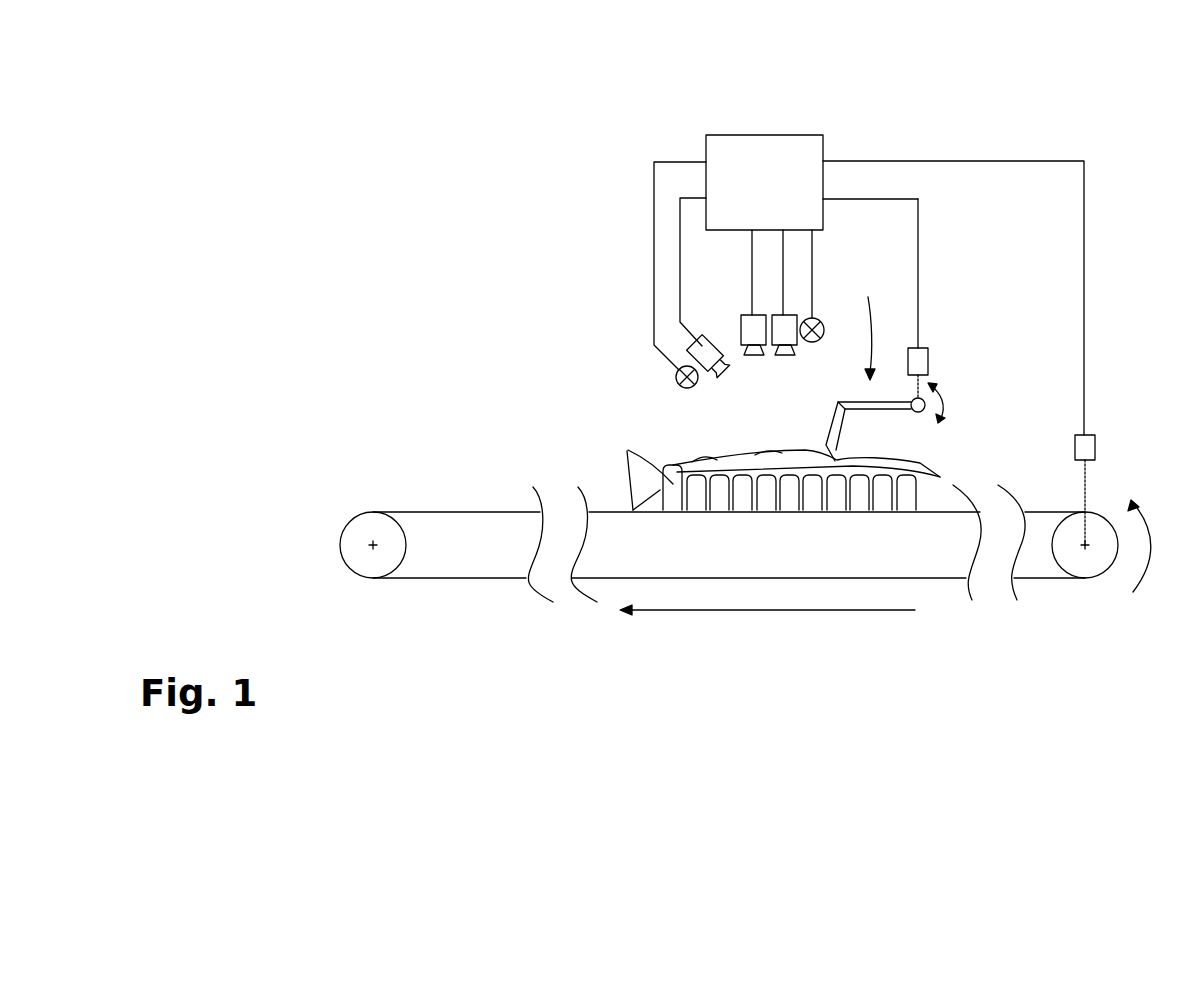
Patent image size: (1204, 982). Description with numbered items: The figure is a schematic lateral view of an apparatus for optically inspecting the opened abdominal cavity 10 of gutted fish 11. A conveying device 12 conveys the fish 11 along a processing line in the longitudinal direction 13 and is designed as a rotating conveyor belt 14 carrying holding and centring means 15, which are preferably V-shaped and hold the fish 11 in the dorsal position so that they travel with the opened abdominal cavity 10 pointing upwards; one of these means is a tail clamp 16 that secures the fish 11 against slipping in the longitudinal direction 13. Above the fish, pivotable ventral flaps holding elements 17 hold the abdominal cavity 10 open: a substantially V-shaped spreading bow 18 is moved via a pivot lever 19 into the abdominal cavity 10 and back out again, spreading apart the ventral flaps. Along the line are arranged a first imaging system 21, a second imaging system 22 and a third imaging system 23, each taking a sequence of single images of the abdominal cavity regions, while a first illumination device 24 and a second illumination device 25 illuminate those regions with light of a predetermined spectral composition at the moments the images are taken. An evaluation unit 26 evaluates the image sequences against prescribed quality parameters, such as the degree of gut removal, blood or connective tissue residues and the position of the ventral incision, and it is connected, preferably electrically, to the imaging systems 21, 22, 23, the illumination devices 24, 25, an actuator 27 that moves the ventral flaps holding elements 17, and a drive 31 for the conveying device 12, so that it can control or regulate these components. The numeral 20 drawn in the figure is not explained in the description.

The opened abdominal cavity 10 is at (847, 460).
The gutted fish 11 is at (778, 468).
The conveying device 12 is at (395, 468).
The longitudinal direction 13 is at (678, 612).
The conveyor belt 14 is at (468, 510).
The holding and centring means 15 is at (886, 492).
The tail clamp 16 is at (629, 460).
The ventral flaps holding elements 17 is at (878, 312).
The spreading bow 18 is at (831, 456).
The pivot lever 19 is at (832, 442).
The fish body part 20 is at (847, 458).
The first imaging system 21 is at (783, 323).
The second imaging system 22 is at (754, 323).
The third imaging system 23 is at (698, 342).
The first illumination device 24 is at (815, 317).
The second illumination device 25 is at (676, 377).
The evaluation unit 26 is at (770, 204).
The actuator 27 is at (921, 364).
The drive 31 is at (1095, 445).